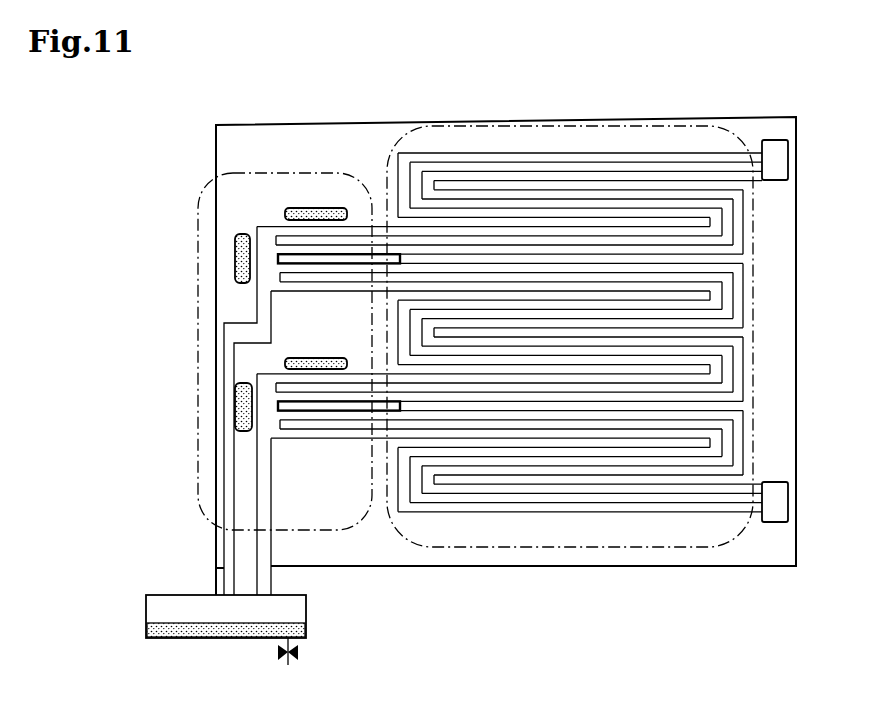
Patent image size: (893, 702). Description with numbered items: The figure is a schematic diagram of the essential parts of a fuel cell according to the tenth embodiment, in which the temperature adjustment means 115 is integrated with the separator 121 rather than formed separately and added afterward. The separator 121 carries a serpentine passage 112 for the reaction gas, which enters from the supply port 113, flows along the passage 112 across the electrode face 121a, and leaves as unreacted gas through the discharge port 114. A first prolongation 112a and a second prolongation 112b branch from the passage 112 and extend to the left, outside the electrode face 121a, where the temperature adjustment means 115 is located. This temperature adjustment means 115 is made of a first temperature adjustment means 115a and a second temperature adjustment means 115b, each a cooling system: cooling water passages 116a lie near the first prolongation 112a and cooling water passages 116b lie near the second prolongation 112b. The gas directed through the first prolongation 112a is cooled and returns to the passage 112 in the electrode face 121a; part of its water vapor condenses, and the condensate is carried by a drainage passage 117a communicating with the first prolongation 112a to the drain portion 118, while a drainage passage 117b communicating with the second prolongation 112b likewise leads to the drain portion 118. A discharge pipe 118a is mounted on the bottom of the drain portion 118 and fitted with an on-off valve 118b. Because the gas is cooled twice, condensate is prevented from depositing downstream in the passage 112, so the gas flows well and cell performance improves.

The passage 112 is at (519, 515).
The first prolongation 112a is at (340, 245).
The second prolongation 112b is at (340, 395).
The supply port 113 is at (788, 155).
The discharge port 114 is at (788, 503).
The temperature adjustment means 115 is at (200, 262).
The first temperature adjustment means 115a is at (248, 215).
The second temperature adjustment means 115b is at (250, 366).
The cooling water passages 116a is at (322, 207).
The cooling water passages 116b is at (300, 357).
The drainage passage 117a is at (222, 455).
The drainage passage 117b is at (274, 490).
The drain portion 118 is at (182, 638).
The discharge pipe 118a is at (290, 639).
The on-off valve 118b is at (298, 652).
The separator 121 is at (797, 272).
The electrode face 121a is at (760, 333).